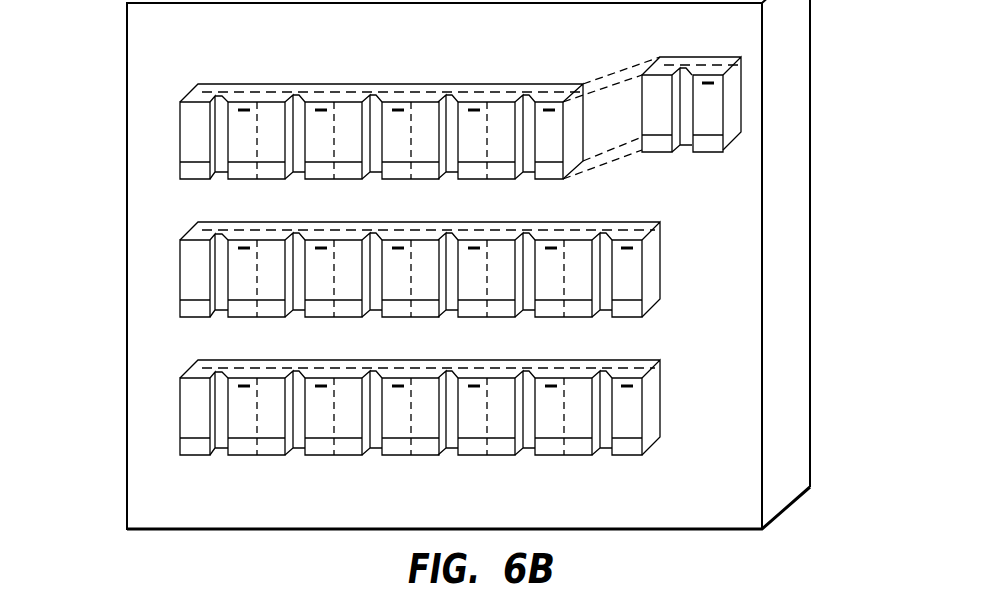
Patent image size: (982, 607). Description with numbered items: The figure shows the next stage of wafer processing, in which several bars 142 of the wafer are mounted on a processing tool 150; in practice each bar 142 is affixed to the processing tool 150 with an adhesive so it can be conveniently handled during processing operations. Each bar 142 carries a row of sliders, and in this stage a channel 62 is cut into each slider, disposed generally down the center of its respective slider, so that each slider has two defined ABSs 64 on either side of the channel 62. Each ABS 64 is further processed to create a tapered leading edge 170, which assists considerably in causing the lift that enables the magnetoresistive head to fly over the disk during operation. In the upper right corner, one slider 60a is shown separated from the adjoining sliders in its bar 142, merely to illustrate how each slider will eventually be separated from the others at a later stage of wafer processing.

The processing tool 150 is at (141, 475).
The bar 142 is at (657, 262).
The channel 62 is at (222, 103).
The ABS 64 is at (347, 110).
The tapered leading edge 170 is at (546, 175).
The slider 60a is at (733, 123).